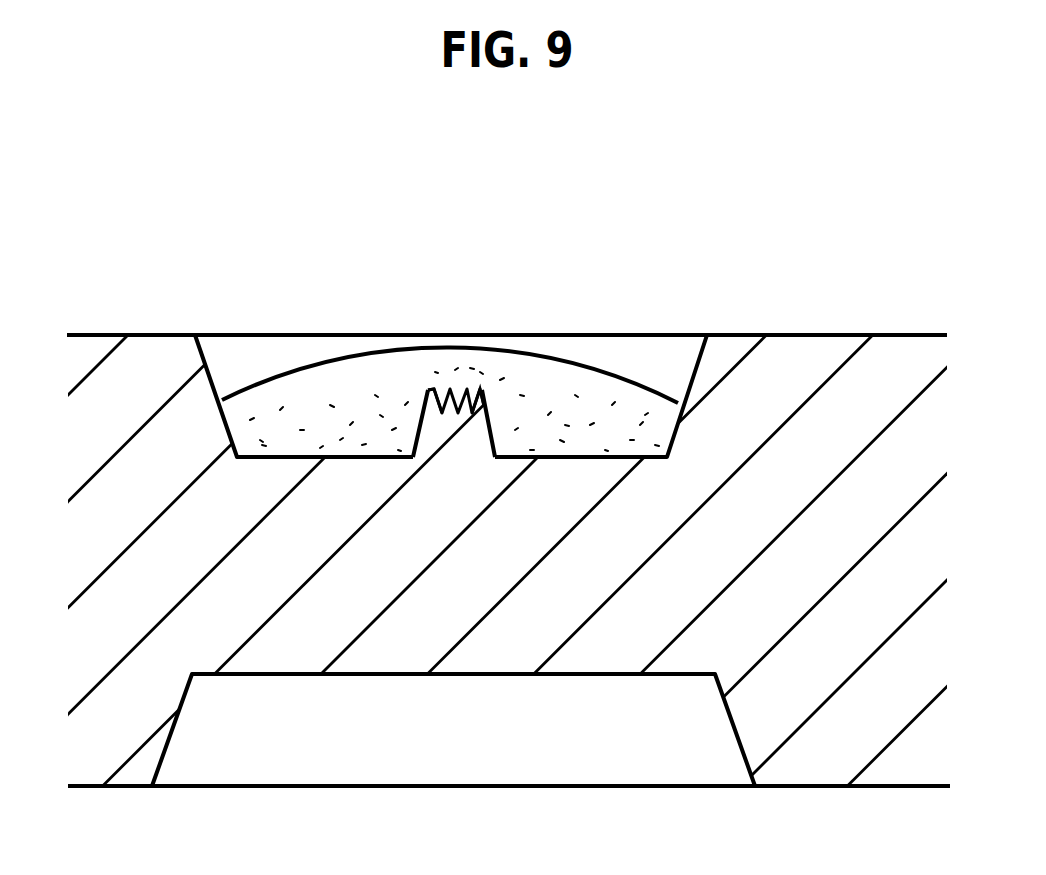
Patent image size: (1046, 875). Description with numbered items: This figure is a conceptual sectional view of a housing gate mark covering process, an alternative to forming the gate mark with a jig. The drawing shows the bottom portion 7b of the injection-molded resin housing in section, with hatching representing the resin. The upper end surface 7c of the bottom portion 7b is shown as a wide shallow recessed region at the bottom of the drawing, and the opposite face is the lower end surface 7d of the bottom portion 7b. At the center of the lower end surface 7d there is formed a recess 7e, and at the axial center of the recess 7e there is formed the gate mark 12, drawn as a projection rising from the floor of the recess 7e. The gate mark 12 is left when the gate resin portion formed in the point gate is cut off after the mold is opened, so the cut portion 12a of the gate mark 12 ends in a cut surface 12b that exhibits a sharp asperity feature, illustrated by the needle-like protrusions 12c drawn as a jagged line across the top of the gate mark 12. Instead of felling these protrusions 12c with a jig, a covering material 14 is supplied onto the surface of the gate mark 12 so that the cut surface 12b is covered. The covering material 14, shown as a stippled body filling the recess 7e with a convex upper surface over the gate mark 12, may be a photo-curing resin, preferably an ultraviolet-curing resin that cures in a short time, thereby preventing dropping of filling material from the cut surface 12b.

The bottom portion 7b is at (475, 590).
The upper end surface 7c is at (363, 677).
The lower end surface 7d is at (118, 335).
The recess 7e is at (287, 444).
The gate mark 12 is at (433, 430).
The cut portion 12a is at (504, 388).
The cut surface 12b is at (440, 388).
The needle-like protrusions 12c is at (483, 403).
The covering material 14 is at (623, 417).